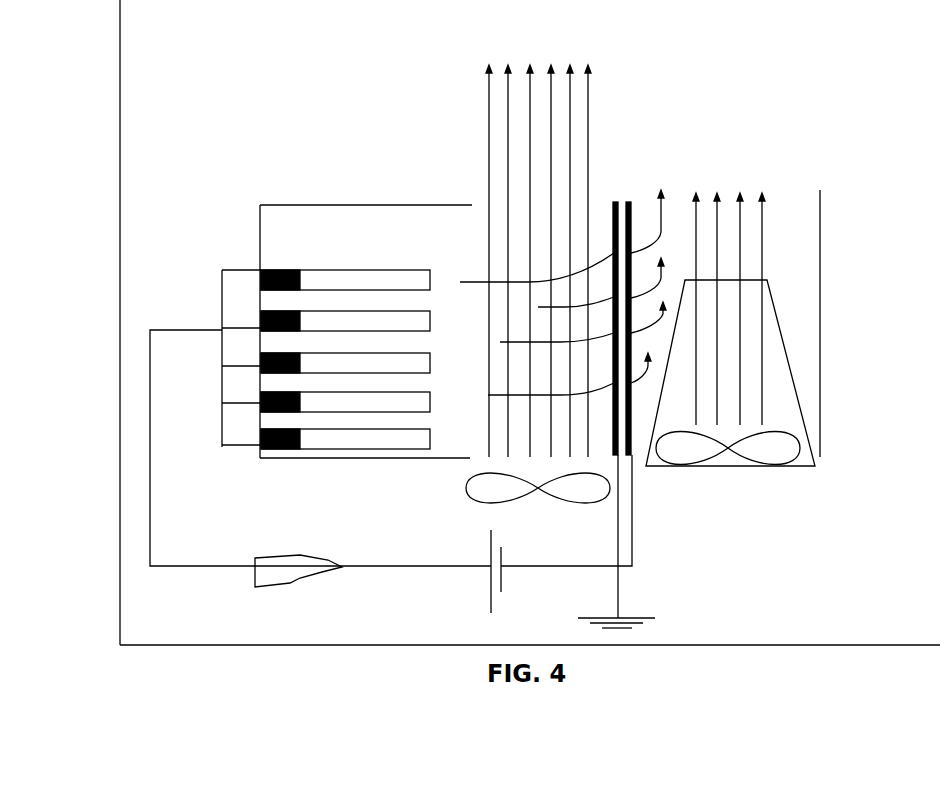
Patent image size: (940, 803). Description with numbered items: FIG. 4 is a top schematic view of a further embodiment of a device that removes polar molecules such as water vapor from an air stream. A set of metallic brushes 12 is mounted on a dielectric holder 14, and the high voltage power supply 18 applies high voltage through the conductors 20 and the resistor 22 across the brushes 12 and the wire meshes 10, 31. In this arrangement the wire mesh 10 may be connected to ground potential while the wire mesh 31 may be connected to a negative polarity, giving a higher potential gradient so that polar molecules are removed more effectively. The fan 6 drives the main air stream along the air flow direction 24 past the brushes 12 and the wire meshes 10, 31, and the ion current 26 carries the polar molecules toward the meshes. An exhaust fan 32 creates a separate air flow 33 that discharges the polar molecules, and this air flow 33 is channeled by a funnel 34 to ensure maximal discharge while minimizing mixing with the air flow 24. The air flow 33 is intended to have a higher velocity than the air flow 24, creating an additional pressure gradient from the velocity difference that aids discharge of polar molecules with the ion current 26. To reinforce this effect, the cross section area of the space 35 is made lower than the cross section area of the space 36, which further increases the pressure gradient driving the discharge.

The fan 6 is at (548, 503).
The conducting wire mesh 10 is at (616, 202).
The metallic brushes 12 is at (350, 276).
The dielectric holder 14 is at (262, 450).
The high voltage power supply 18 is at (472, 548).
The conductors 20 is at (150, 430).
The resistor 22 is at (302, 559).
The air flow direction 24 is at (508, 130).
The ion current 26 is at (478, 282).
The wire mesh 31 is at (632, 445).
The exhaust fan 32 is at (735, 463).
The air flow 33 is at (762, 240).
The funnel 34 is at (806, 355).
The space 35 is at (790, 280).
The space 36 is at (457, 430).